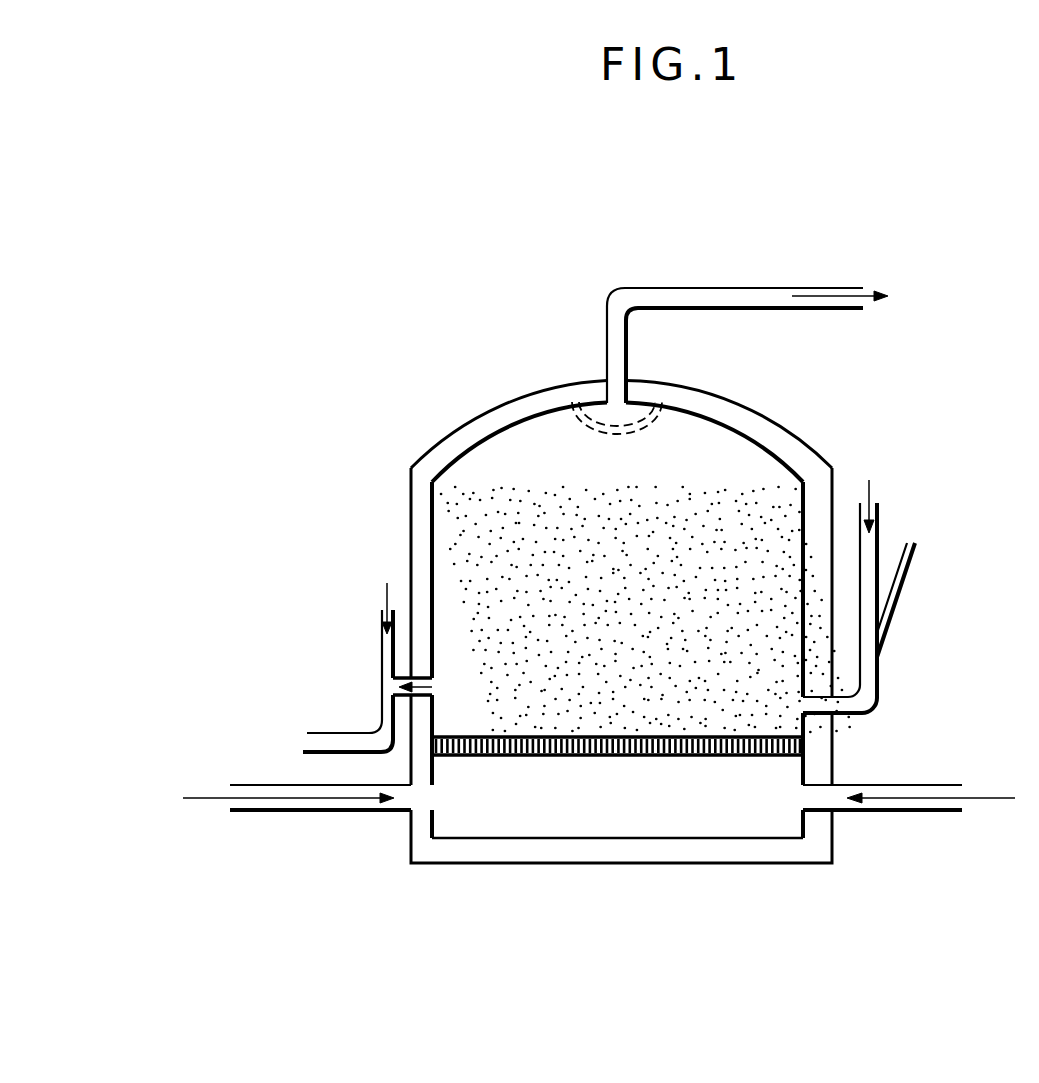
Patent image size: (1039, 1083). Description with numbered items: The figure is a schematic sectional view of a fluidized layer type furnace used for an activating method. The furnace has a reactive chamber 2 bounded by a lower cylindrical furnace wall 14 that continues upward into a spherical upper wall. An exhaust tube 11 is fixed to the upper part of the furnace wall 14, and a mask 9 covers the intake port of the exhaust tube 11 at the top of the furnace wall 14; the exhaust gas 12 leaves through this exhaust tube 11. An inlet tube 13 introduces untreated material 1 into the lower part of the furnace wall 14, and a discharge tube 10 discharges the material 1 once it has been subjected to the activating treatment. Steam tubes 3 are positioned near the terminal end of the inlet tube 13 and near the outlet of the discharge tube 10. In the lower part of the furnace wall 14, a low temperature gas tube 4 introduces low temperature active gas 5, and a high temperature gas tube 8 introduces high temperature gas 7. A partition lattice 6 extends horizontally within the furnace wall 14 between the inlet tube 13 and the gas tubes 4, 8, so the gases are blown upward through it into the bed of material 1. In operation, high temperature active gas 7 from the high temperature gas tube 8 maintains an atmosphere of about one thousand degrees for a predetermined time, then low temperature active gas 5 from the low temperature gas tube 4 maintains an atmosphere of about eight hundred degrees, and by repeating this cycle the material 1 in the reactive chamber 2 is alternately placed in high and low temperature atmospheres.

The material 1 is at (458, 550).
The reactive chamber 2 is at (513, 387).
The steam tubes 3 is at (912, 551).
The low temperature gas tube 4 is at (915, 783).
The low temperature active gas 5 is at (990, 797).
The partition lattice 6 is at (627, 757).
The high temperature gas 7 is at (200, 797).
The high temperature gas tube 8 is at (247, 814).
The mask 9 is at (606, 436).
The discharge tube 10 is at (310, 742).
The exhaust tube 11 is at (809, 287).
The exhaust gas 12 is at (868, 294).
The inlet tube 13 is at (880, 511).
The furnace wall 14 is at (470, 440).